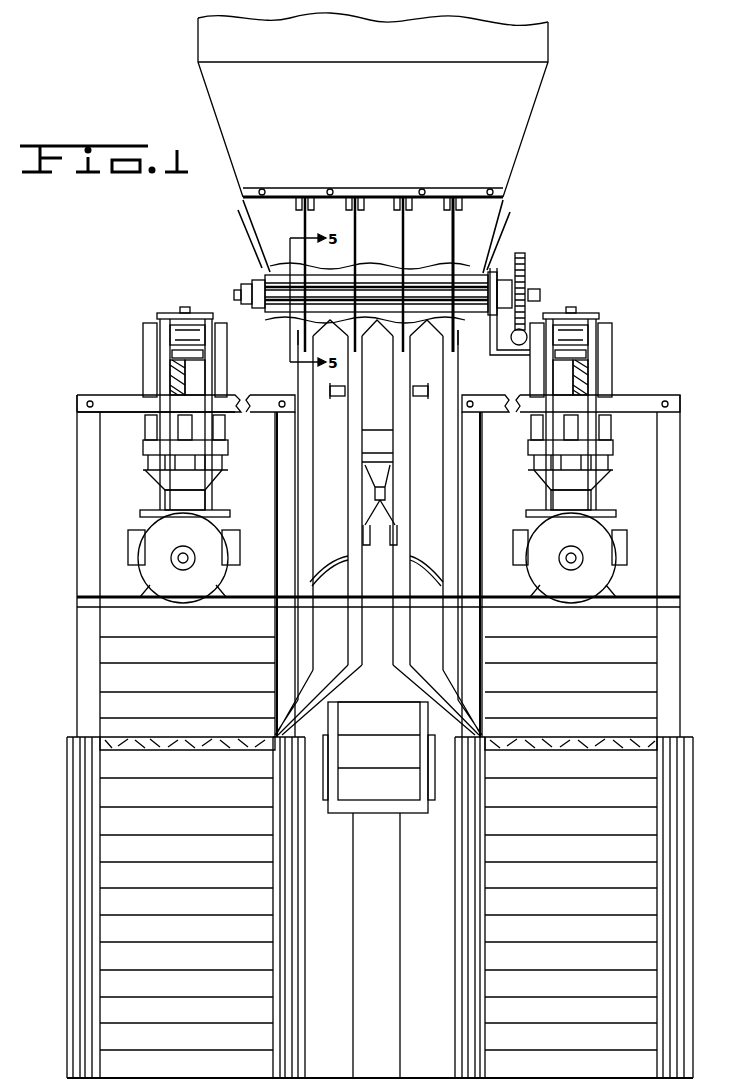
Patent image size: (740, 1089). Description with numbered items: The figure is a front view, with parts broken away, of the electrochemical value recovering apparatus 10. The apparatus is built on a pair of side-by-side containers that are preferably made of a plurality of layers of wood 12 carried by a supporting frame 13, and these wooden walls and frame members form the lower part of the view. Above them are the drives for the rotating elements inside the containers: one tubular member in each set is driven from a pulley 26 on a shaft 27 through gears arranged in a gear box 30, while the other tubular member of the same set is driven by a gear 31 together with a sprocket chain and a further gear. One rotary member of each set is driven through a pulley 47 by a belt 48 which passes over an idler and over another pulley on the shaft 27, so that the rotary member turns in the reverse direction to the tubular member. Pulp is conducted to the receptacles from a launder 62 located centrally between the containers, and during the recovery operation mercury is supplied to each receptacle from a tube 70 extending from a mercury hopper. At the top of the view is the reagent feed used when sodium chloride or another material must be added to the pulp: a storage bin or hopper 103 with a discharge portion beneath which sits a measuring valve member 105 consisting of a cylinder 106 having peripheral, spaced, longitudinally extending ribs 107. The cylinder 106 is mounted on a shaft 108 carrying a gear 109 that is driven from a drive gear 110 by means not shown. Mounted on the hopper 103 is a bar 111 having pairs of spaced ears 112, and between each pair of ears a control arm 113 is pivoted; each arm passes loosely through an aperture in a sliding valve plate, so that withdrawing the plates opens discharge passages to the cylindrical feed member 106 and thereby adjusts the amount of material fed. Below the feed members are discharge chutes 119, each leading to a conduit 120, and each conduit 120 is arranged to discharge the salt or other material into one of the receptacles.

The electrochemical value recovering apparatus 10 is at (678, 490).
The layers of wood 12 is at (683, 776).
The supporting frame 13 is at (680, 604).
The pulley 26 is at (600, 524).
The shaft 27 is at (578, 562).
The gear box 30 is at (627, 540).
The gear 31 is at (210, 514).
The pulley 47 is at (580, 315).
The belt 48 is at (590, 378).
The launder 62 is at (370, 708).
The tube 70 is at (322, 566).
The storage bin 103 is at (543, 80).
The measuring valve member 105 is at (256, 306).
The cylinder 106 is at (492, 255).
The ribs 107 is at (255, 274).
The shaft 108 is at (535, 290).
The gear 109 is at (524, 262).
The drive gear 110 is at (528, 325).
The bar 111 is at (432, 188).
The ears 112 is at (358, 210).
The control arm 113 is at (305, 225).
The discharge chutes 119 is at (290, 335).
The conduit 120 is at (290, 365).